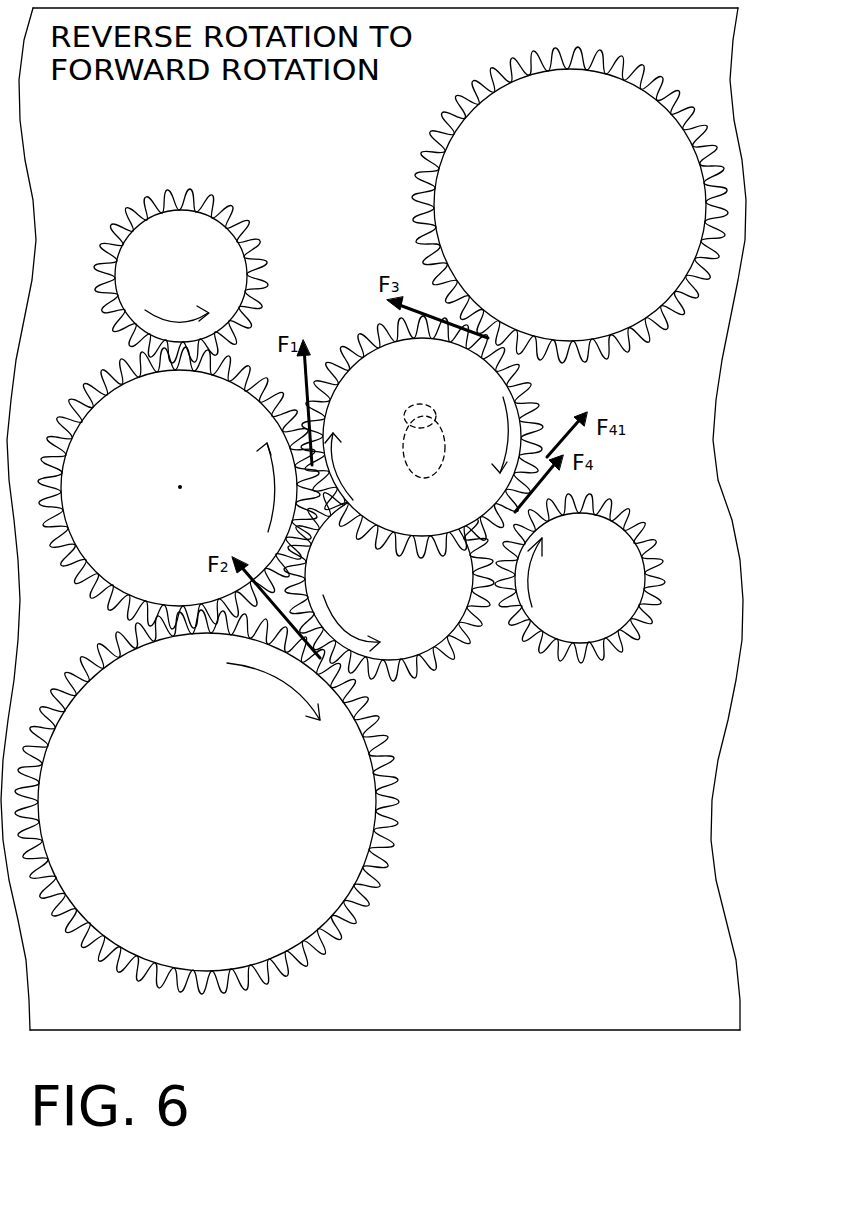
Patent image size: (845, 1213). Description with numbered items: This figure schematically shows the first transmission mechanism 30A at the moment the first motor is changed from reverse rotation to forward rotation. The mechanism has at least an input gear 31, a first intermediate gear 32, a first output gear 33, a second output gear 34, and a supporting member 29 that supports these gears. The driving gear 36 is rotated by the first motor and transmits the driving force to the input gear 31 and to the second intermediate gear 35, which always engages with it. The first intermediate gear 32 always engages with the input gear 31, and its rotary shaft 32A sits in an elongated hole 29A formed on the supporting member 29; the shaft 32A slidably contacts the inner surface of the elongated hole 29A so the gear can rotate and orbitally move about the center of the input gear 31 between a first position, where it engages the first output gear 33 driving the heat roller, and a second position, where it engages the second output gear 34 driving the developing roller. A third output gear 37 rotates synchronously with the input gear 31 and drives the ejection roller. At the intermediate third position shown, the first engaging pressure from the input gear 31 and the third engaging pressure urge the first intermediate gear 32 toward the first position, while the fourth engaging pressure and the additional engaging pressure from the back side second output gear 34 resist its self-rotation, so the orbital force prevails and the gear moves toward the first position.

The supporting member 29 is at (637, 1008).
The elongated hole 29A is at (435, 422).
The first transmission mechanism 30A is at (302, 198).
The input gear 31 is at (113, 428).
The first intermediate gear 32 is at (367, 352).
The rotary shaft 32A is at (402, 405).
The first output gear 33 is at (637, 103).
The second output gear 34 is at (618, 606).
The second intermediate gear 35 is at (430, 608).
The driving gear 36 is at (328, 855).
The third output gear 37 is at (176, 222).